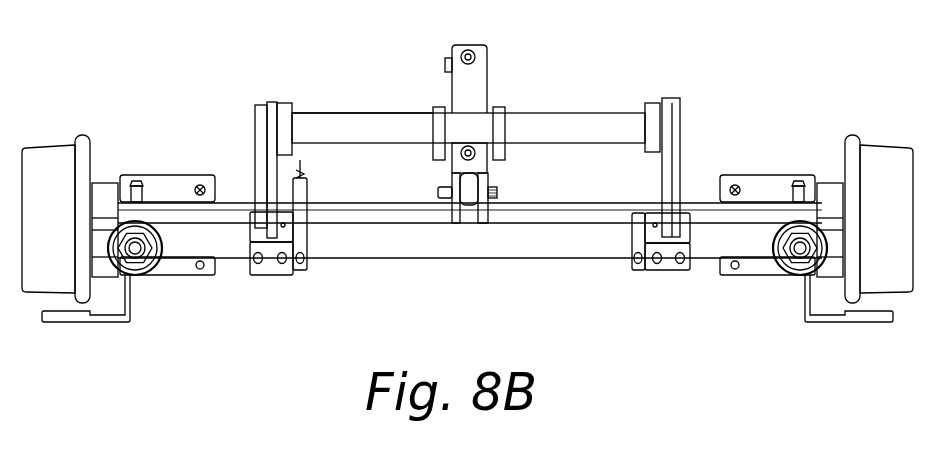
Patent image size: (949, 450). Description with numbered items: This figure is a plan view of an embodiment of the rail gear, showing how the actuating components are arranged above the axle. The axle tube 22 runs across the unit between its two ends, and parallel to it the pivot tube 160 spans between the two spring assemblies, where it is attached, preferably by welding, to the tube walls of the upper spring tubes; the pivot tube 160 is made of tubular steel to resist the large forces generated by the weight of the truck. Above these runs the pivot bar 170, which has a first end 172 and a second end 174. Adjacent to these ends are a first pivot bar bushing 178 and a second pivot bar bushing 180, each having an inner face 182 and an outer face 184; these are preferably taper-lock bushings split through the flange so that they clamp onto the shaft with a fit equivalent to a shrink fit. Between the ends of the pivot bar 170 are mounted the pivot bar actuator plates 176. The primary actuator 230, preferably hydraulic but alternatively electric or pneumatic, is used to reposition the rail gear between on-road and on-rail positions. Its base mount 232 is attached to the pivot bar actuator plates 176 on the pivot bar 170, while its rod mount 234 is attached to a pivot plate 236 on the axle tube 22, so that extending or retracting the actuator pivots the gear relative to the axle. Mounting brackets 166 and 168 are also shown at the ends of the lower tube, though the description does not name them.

The axle tube 22 is at (588, 211).
The pivot tube 160 is at (558, 252).
The left mounting bracket 166 is at (257, 276).
The right mounting bracket 168 is at (683, 214).
The pivot bar 170 is at (582, 112).
The first end of pivot bar 172 is at (293, 108).
The second end of pivot bar 174 is at (647, 106).
The pivot bar actuator plate 176 is at (497, 106).
The first pivot bar bushing 178 is at (272, 101).
The second pivot bar bushing 180 is at (656, 102).
The inner face of bushing 182 is at (292, 103).
The outer face of bushing 184 is at (263, 106).
The primary actuator 230 is at (470, 45).
The base mount 232 is at (451, 110).
The rod mount 234 is at (478, 186).
The pivot plate 236 is at (452, 188).